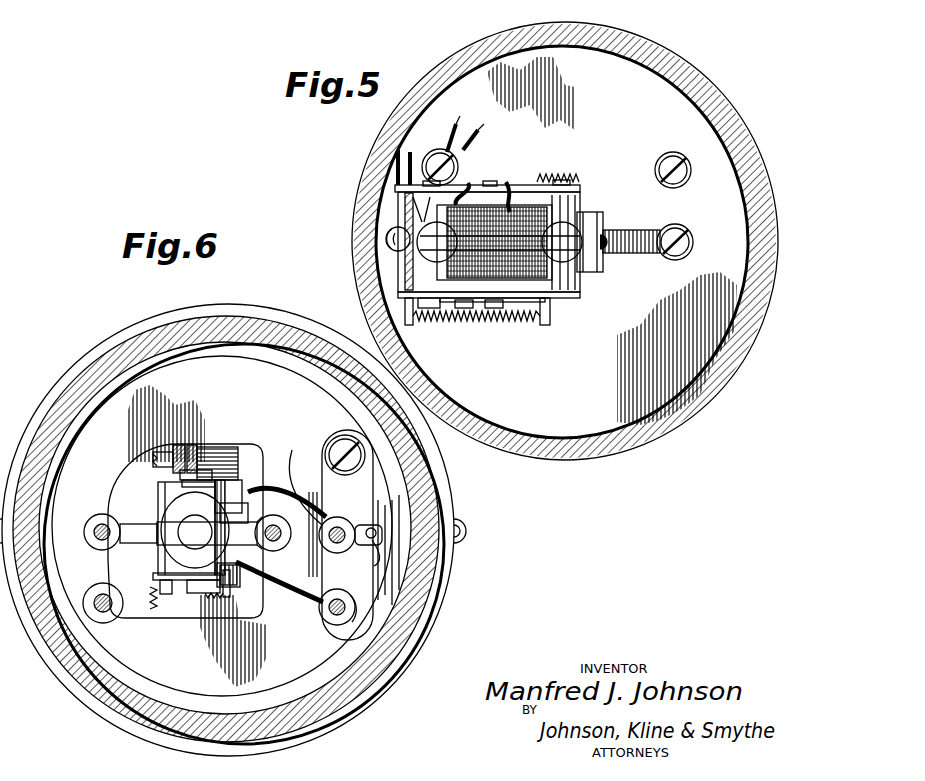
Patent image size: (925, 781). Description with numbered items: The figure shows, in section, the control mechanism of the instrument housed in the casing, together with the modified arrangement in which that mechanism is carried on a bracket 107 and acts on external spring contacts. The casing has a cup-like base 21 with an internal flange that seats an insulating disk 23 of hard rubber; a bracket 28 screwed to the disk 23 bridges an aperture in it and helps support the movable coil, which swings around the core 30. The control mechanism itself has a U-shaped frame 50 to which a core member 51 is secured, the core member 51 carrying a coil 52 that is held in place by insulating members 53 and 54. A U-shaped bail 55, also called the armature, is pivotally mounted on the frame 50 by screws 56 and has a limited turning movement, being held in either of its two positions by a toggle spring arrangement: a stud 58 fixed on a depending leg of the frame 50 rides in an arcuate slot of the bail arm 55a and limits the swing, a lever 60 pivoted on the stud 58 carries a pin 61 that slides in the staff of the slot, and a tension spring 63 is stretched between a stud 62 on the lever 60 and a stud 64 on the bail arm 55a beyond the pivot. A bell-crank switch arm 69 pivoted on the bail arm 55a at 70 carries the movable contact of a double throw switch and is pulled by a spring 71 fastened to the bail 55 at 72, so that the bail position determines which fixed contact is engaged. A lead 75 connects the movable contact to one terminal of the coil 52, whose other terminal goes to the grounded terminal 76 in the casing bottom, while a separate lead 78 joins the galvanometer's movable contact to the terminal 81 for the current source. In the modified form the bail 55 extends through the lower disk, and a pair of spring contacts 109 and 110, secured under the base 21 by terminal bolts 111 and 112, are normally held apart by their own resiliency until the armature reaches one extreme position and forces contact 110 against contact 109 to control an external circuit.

In FIG. 5, the base 21 is at (680, 62).
In FIG. 5, the disk 23 is at (668, 112).
In FIG. 6, the disk 23 is at (398, 692).
In FIG. 6, the bracket 28 is at (346, 535).
In FIG. 6, the core 30 is at (380, 517).
In FIG. 5, the U-shaped frame 50 is at (418, 280).
In FIG. 5, the core member 51 is at (572, 262).
In FIG. 6, the core member 51 is at (192, 530).
In FIG. 5, the coil 52 is at (520, 212).
In FIG. 5, the insulating member 53 is at (440, 262).
In FIG. 5, the insulating member 54 is at (548, 282).
In FIG. 6, the insulating member 54 is at (182, 512).
In FIG. 5, the U-shaped bail 55 is at (556, 272).
In FIG. 6, the U-shaped bail 55 is at (228, 500).
In FIG. 5, the bail arm 55a is at (520, 296).
In FIG. 6, the bail arm 55a is at (206, 482).
In FIG. 5, the pivot screws 56 is at (424, 158).
In FIG. 6, the pivot screws 56 is at (190, 592).
In FIG. 5, the stud 58 is at (488, 306).
In FIG. 5, the lever 60 is at (514, 306).
In FIG. 6, the lever 60 is at (176, 478).
In FIG. 5, the pin 61 is at (468, 326).
In FIG. 5, the stud 62 is at (548, 312).
In FIG. 6, the stud 62 is at (180, 448).
In FIG. 5, the tension spring 63 is at (430, 310).
In FIG. 6, the tension spring 63 is at (193, 448).
In FIG. 5, the stud 64 is at (400, 305).
In FIG. 6, the stud 64 is at (208, 470).
In FIG. 5, the switch arm 69 is at (522, 192).
In FIG. 5, the pivot 70 is at (494, 175).
In FIG. 5, the spring 71 is at (561, 176).
In FIG. 6, the spring 71 is at (214, 600).
In FIG. 5, the spring attachment point 72 is at (580, 178).
In FIG. 6, the spring attachment point 72 is at (239, 584).
In FIG. 5, the lead 75 is at (507, 182).
In FIG. 5, the grounded terminal 76 is at (459, 165).
In FIG. 6, the grounded terminal 76 is at (330, 616).
In FIG. 6, the lead 78 is at (278, 492).
In FIG. 5, the terminal 81 is at (388, 236).
In FIG. 6, the terminal 81 is at (292, 450).
In FIG. 6, the bracket 107 is at (192, 600).
In FIG. 6, the spring contact 109 is at (112, 508).
In FIG. 5, the spring contact 110 is at (630, 232).
In FIG. 6, the spring contact 110 is at (166, 600).
In FIG. 5, the terminal bolt 111 is at (592, 222).
In FIG. 6, the terminal bolt 111 is at (93, 532).
In FIG. 5, the terminal bolt 112 is at (689, 232).
In FIG. 6, the terminal bolt 112 is at (274, 526).